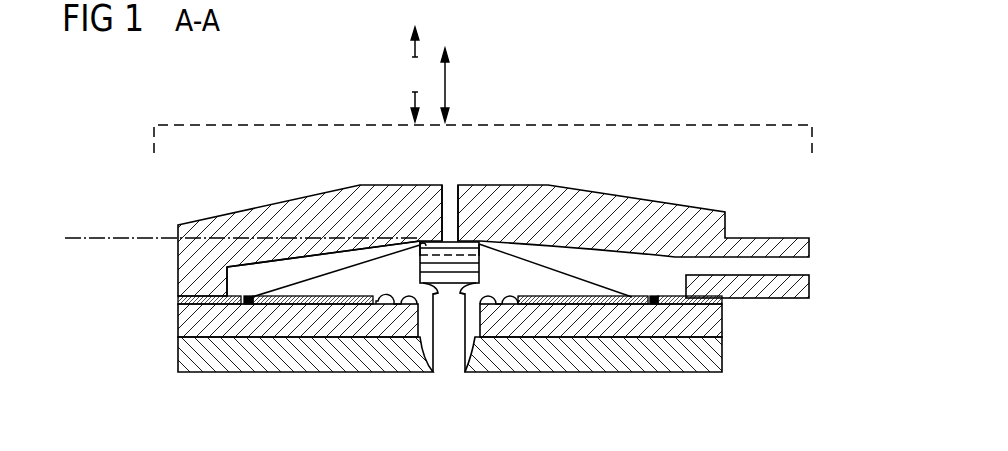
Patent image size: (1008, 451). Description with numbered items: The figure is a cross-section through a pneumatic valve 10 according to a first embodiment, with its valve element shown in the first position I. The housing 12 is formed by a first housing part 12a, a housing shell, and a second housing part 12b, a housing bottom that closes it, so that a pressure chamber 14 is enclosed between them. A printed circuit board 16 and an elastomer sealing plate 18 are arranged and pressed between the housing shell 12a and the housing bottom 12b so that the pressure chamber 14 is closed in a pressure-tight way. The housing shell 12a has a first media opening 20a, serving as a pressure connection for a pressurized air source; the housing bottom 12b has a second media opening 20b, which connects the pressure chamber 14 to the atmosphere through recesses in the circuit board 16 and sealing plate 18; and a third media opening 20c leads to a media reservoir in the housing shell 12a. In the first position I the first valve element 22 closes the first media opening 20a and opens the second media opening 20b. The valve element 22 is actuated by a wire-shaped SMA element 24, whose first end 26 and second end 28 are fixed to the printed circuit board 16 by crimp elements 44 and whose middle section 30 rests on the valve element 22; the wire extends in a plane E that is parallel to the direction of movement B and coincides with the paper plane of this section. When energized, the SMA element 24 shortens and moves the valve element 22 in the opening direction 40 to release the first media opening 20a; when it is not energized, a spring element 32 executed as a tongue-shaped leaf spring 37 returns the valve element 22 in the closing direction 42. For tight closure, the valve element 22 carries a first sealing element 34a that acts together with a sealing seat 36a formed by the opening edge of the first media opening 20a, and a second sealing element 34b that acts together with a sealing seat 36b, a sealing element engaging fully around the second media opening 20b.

The valve 10 is at (712, 115).
The housing 12 is at (455, 268).
The first housing part 12a is at (205, 232).
The second housing part 12b is at (190, 352).
The pressure chamber 14 is at (254, 265).
The printed circuit board 16 is at (190, 317).
The sealing plate 18 is at (177, 298).
The first media opening 20a is at (450, 242).
The second media opening 20b is at (448, 350).
The third media opening 20c is at (790, 267).
The first valve element 22 is at (417, 275).
The first wire-shaped SMA element 24 is at (342, 268).
The first end 26 is at (258, 300).
The second end 28 is at (673, 373).
The middle section 30 is at (480, 250).
The spring element 32 is at (633, 206).
The leaf spring 37 is at (547, 186).
The first sealing element 34a is at (480, 252).
The second sealing element 34b is at (449, 293).
The sealing seat 36a is at (419, 242).
The sealing seat 36b is at (415, 350).
The opening direction 40 is at (412, 97).
The closing direction 42 is at (412, 53).
The crimp elements 44 is at (250, 296).
The direction of movement B is at (448, 85).
The plane E is at (233, 124).
The first position I is at (82, 237).